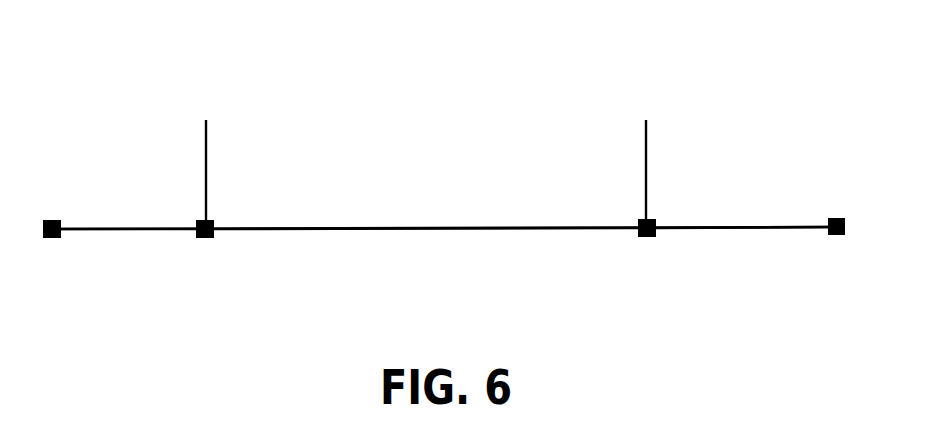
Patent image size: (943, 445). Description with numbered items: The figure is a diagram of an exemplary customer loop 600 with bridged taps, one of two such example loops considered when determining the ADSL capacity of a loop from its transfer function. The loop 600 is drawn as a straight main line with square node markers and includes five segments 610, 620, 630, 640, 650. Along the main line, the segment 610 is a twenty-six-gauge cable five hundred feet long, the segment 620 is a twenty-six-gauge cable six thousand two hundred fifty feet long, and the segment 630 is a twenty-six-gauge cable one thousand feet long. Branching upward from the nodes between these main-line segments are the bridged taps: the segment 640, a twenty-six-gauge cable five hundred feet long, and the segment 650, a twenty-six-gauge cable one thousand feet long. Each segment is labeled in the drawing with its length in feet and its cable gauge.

The loop 600 is at (149, 26).
The segment 610 is at (128, 230).
The segment 620 is at (428, 230).
The segment 630 is at (752, 230).
The segment 640 is at (206, 167).
The segment 650 is at (646, 168).